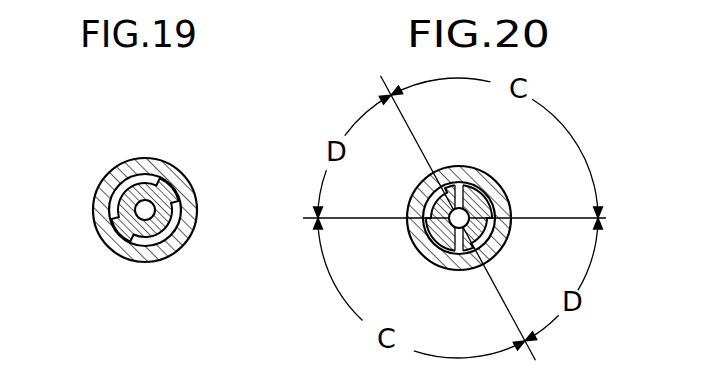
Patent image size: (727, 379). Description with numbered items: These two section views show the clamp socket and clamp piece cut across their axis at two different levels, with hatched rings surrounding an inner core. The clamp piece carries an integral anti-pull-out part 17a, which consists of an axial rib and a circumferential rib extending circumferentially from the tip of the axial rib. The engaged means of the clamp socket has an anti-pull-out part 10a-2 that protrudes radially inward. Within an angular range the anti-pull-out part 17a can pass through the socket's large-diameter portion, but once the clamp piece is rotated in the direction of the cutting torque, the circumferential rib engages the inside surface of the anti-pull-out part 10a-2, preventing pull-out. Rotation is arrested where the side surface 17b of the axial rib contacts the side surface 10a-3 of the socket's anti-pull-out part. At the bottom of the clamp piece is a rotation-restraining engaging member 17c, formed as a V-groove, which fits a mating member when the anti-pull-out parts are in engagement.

In FIG. 19, the side surface of the axial rib 17b is at (148, 158).
In FIG. 19, the side surface of the anti-pull-out part 10a-3 is at (146, 160).
In FIG. 20, the anti-pull-out part 17a is at (473, 199).
In FIG. 20, the anti-pull-out part 10a-2 is at (430, 203).
In FIG. 20, the rotation-restraining engaging member 17c is at (460, 254).